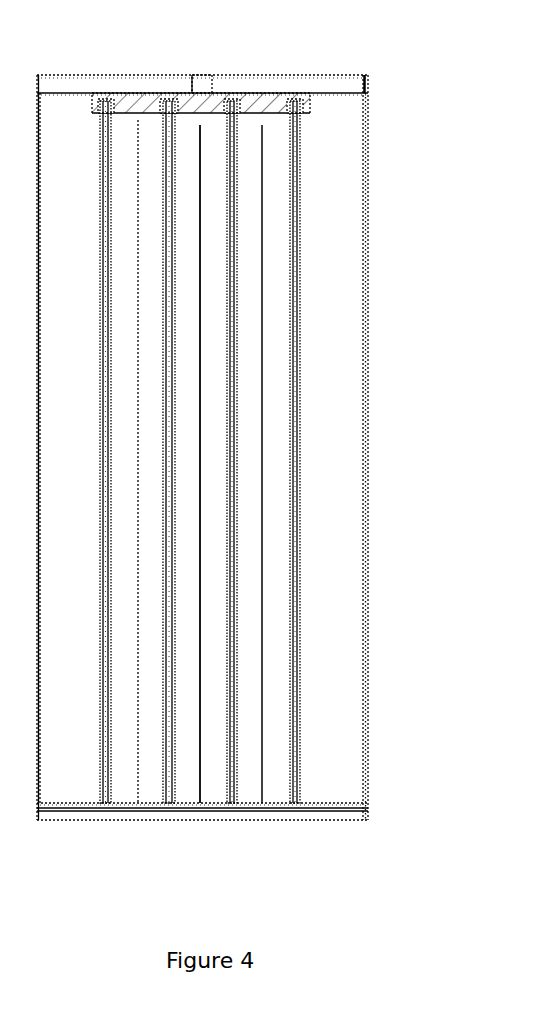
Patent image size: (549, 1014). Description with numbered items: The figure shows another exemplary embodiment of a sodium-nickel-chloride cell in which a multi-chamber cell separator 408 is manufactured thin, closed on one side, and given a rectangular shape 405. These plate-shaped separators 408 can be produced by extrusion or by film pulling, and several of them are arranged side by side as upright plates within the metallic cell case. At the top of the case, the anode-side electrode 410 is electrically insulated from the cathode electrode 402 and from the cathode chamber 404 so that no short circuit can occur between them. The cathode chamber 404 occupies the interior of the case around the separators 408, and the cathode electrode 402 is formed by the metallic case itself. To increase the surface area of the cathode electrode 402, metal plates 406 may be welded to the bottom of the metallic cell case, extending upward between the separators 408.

The cathode electrode 402 is at (362, 363).
The cathode chamber 404 is at (314, 521).
The rectangular shape 405 is at (293, 253).
The metal plates 406 is at (138, 778).
The multi-chamber cell separator 408 is at (297, 805).
The anode-side electrode 410 is at (200, 75).